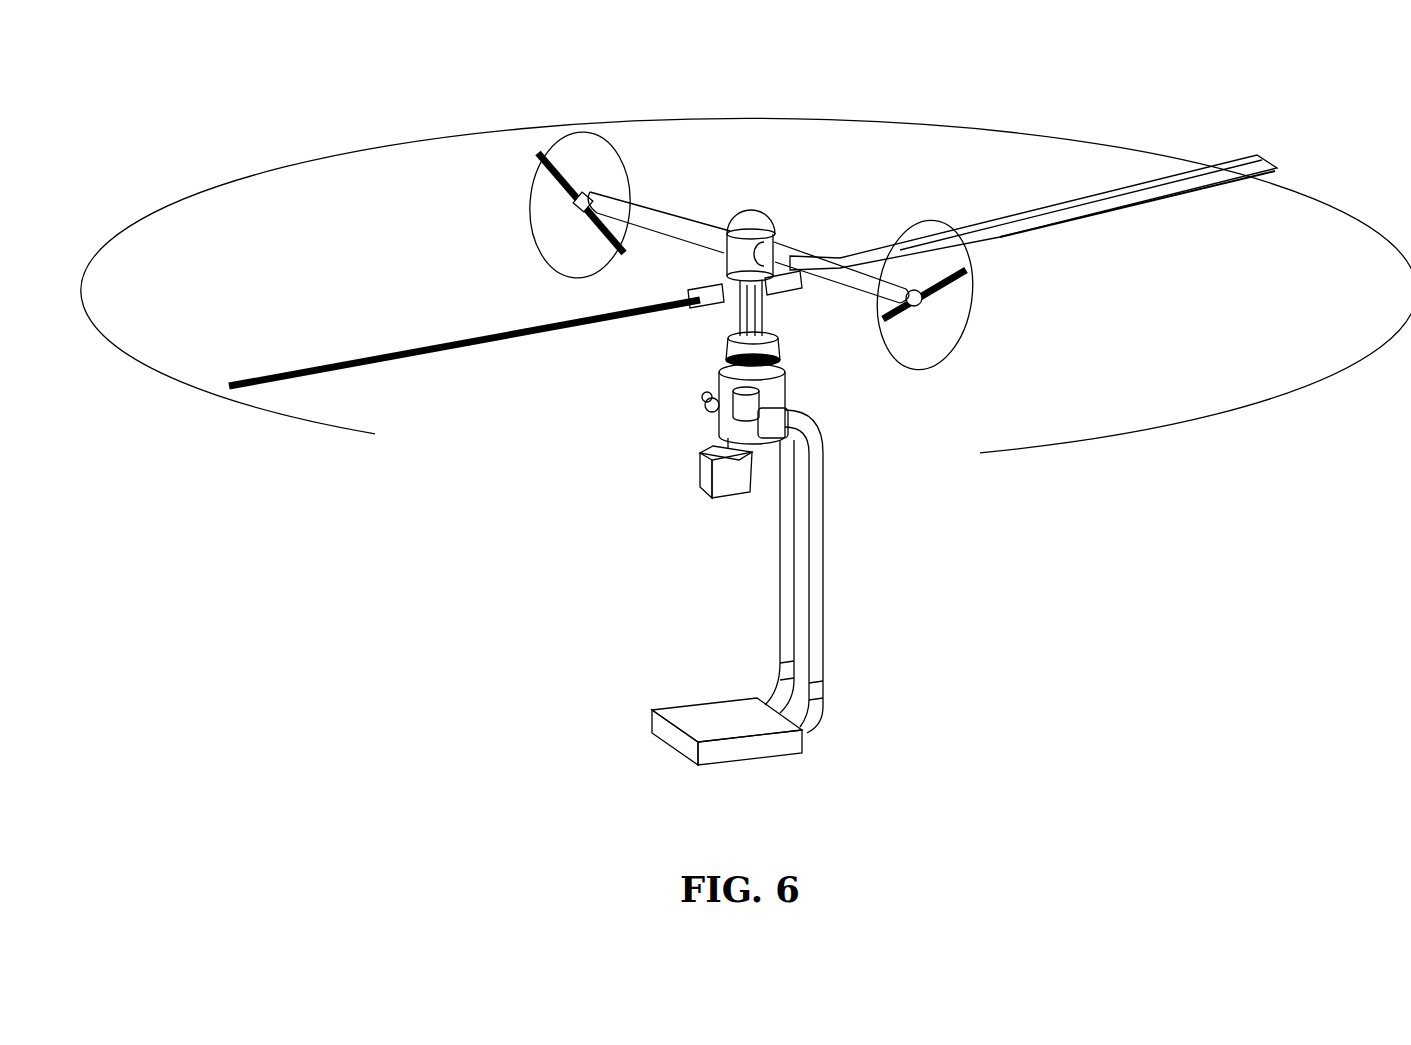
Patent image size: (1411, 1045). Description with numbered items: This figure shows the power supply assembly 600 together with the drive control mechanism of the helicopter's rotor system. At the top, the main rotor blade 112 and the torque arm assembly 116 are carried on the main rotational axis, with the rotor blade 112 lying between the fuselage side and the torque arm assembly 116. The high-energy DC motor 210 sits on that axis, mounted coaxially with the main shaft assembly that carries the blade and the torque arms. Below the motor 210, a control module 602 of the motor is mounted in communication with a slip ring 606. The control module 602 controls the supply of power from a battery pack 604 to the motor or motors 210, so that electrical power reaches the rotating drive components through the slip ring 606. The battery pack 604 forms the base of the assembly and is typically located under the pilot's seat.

The power supply assembly 600 is at (240, 153).
The main rotor blade 112 is at (1272, 146).
The torque arm assembly 116 is at (684, 188).
The high-energy DC motor 210 is at (771, 228).
The slip ring 606 is at (783, 379).
The control module 602 is at (703, 467).
The battery pack 604 is at (736, 723).